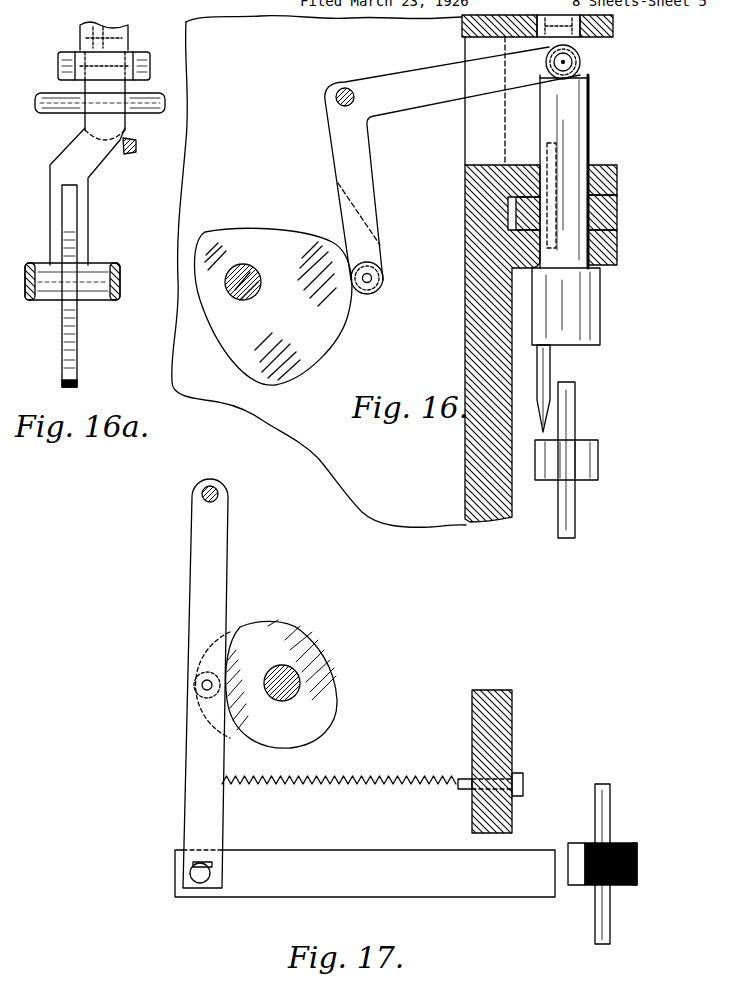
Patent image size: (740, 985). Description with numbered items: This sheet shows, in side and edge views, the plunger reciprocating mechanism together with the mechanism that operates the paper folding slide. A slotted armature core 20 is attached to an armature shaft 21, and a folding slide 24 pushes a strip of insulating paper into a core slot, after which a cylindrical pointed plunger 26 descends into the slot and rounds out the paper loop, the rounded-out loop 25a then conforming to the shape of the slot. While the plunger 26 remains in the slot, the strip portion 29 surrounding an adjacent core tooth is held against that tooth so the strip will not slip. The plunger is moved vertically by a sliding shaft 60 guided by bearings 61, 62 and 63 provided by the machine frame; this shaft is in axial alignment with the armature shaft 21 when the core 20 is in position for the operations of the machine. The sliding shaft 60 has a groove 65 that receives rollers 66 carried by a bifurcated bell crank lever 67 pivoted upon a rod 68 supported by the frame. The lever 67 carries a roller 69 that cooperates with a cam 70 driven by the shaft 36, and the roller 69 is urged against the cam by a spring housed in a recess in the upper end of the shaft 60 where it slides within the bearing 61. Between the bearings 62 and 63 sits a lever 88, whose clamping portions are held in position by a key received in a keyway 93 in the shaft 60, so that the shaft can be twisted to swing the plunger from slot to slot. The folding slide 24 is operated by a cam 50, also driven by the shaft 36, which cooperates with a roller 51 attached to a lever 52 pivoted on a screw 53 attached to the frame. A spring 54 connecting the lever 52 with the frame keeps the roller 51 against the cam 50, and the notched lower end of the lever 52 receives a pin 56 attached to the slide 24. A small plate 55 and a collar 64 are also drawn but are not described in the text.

In FIG. 16, the slotted armature core 20 is at (598, 460).
In FIG. 17, the slotted armature core 20 is at (638, 860).
In FIG. 16, the armature shaft 21 is at (576, 420).
In FIG. 17, the armature shaft 21 is at (612, 818).
In FIG. 17, the folding slide 24 is at (498, 880).
In FIG. 17, the rounded-out paper loop 25a is at (580, 880).
In FIG. 16, the pointed plunger 26 is at (548, 370).
In FIG. 17, the strip portion 29 is at (637, 846).
In FIG. 16, the shaft 36 is at (240, 264).
In FIG. 16A, the shaft 36 is at (100, 265).
In FIG. 17, the shaft 36 is at (284, 668).
In FIG. 17, the cam 50 is at (318, 672).
In FIG. 17, the roller 51 is at (200, 696).
In FIG. 17, the lever 52 is at (222, 567).
In FIG. 17, the screw 53 is at (218, 492).
In FIG. 17, the spring 54 is at (398, 775).
In FIG. 17, the plate 55 is at (198, 862).
In FIG. 17, the pin 56 is at (200, 883).
In FIG. 16, the sliding shaft 60 is at (583, 137).
In FIG. 16A, the sliding shaft 60 is at (132, 150).
In FIG. 16, the bearing 61 is at (613, 27).
In FIG. 16A, the bearing 61 is at (48, 95).
In FIG. 16, the bearing 62 is at (617, 180).
In FIG. 16, the bearing 63 is at (617, 246).
In FIG. 16, the collar 64 is at (600, 308).
In FIG. 16, the groove 65 is at (582, 67).
In FIG. 16A, the groove 65 is at (76, 92).
In FIG. 16, the rollers 66 is at (585, 82).
In FIG. 16A, the rollers 66 is at (80, 62).
In FIG. 16, the bifurcated bell crank lever 67 is at (430, 70).
In FIG. 16A, the bifurcated bell crank lever 67 is at (108, 102).
In FIG. 16, the rod 68 is at (345, 88).
In FIG. 16, the roller 69 is at (372, 277).
In FIG. 16, the cam 70 is at (290, 247).
In FIG. 16A, the cam 70 is at (64, 232).
In FIG. 16, the lever 88 is at (617, 211).
In FIG. 16, the keyway 93 is at (549, 162).